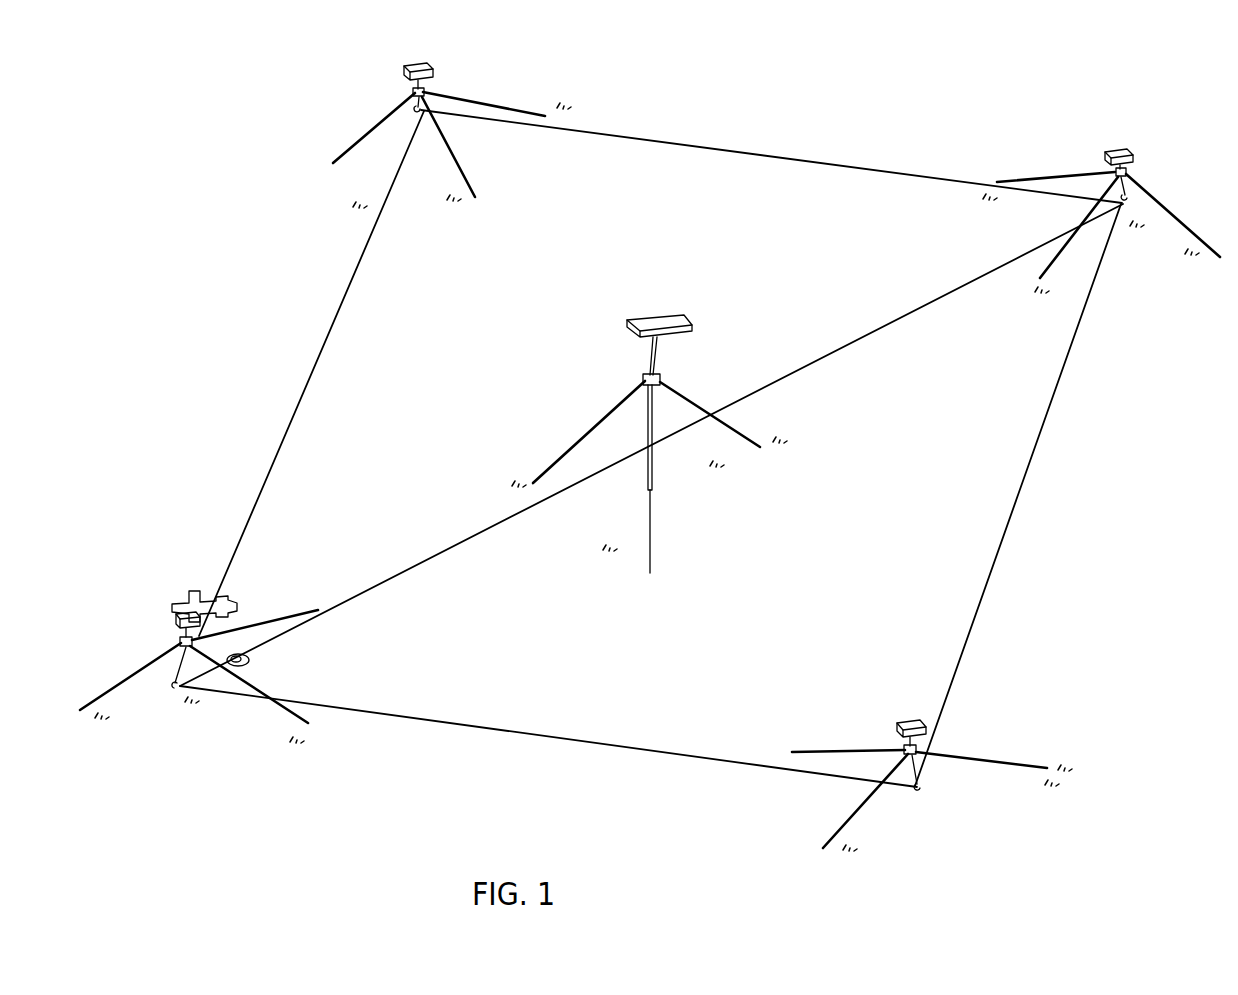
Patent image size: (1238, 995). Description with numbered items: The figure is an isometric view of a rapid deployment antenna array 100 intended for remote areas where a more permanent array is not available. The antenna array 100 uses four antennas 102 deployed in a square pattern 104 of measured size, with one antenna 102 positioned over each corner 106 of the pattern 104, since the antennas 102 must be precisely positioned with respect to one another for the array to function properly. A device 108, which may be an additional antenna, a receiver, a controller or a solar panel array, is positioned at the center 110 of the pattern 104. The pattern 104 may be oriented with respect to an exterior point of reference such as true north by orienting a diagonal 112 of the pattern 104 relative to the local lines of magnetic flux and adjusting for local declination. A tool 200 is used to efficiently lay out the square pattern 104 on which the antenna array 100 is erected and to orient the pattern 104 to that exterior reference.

The rapid deployment antenna array 100 is at (962, 118).
The antenna 102 is at (460, 88).
The square pattern 104 is at (707, 148).
The corner 106 is at (413, 112).
The device 108 is at (672, 317).
The center 110 is at (680, 437).
The diagonal 112 is at (502, 525).
The tool 200 is at (227, 562).